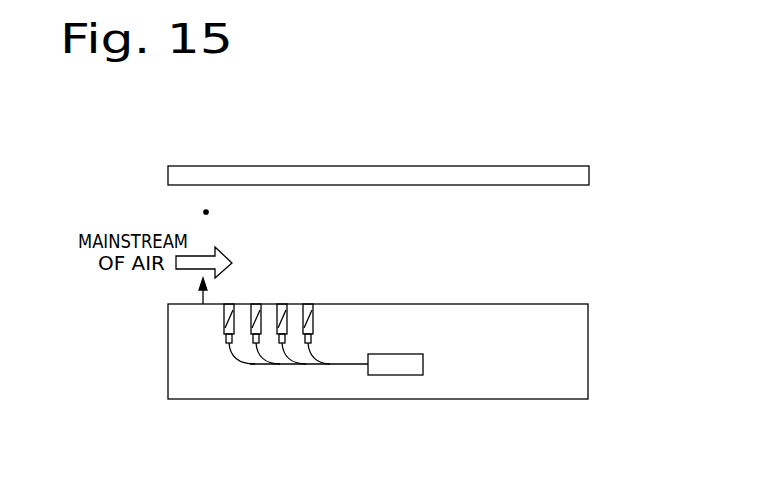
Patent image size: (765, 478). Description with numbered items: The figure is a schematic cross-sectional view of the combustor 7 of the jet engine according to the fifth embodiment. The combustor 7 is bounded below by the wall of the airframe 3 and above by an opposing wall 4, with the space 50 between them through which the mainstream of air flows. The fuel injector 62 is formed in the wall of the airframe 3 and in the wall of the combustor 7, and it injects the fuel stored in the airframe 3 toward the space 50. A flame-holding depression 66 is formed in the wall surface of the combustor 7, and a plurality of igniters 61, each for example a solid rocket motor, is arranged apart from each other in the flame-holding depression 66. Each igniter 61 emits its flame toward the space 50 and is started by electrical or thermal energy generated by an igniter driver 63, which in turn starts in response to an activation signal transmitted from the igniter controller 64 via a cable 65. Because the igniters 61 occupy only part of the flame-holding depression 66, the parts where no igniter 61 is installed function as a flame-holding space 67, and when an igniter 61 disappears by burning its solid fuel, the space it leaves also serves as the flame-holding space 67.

The airframe 3 is at (190, 399).
The upper plate 4 is at (351, 177).
The combustor 7 is at (628, 165).
The space 50 is at (206, 212).
The igniter 61 is at (297, 313).
The fuel injector 62 is at (200, 309).
The igniter driver 63 is at (229, 343).
The igniter controller 64 is at (423, 362).
The cable 65 is at (338, 365).
The flame-holding depression 66 is at (243, 336).
The flame-holding space 67 is at (258, 312).